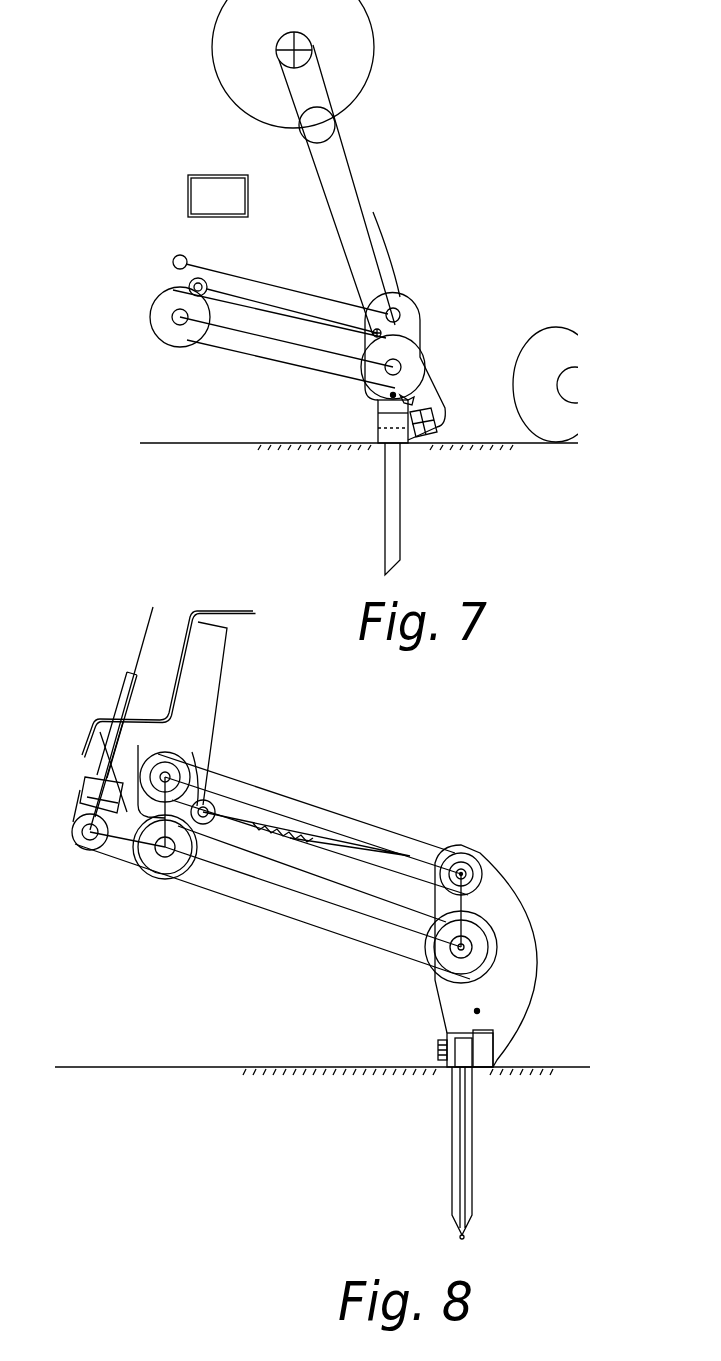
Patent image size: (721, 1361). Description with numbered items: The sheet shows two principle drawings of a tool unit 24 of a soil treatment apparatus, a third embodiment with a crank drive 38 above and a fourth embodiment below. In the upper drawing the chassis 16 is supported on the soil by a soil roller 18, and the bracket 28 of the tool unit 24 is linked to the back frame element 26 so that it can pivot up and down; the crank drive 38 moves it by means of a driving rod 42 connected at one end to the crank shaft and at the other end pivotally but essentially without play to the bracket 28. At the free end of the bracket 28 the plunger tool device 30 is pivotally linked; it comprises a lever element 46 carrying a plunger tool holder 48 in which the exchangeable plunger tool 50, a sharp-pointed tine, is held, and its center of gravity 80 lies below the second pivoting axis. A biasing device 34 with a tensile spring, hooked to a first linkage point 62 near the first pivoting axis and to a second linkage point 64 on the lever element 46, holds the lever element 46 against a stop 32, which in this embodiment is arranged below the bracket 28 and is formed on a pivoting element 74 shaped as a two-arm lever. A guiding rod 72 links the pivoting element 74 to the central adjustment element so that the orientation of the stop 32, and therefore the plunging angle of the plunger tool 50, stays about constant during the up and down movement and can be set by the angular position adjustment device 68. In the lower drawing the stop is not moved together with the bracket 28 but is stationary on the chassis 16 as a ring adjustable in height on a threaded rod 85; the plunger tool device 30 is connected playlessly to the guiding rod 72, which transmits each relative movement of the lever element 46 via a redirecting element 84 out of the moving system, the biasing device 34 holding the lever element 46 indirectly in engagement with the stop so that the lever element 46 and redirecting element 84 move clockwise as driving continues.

In FIG. 8, the chassis 16 is at (153, 606).
In FIG. 7, the soil roller 18 is at (560, 338).
In FIG. 7, the tool unit 24 is at (482, 263).
In FIG. 8, the tool unit 24 is at (530, 843).
In FIG. 8, the back frame element 26 is at (207, 678).
In FIG. 7, the bracket 28 is at (267, 350).
In FIG. 8, the bracket 28 is at (315, 913).
In FIG. 7, the plunger tool device 30 is at (374, 413).
In FIG. 8, the plunger tool device 30 is at (535, 911).
In FIG. 7, the stop 32 is at (421, 447).
In FIG. 8, the stop 32 is at (103, 695).
In FIG. 7, the biasing device 34 is at (273, 307).
In FIG. 8, the biasing device 34 is at (298, 818).
In FIG. 7, the crank drive 38 is at (387, 43).
In FIG. 7, the driving rod 42 is at (343, 192).
In FIG. 8, the lever element 46 is at (522, 950).
In FIG. 7, the plunger tool holder 48 is at (372, 435).
In FIG. 7, the plunger tool 50 is at (405, 535).
In FIG. 8, the plunger tool 50 is at (479, 1148).
In FIG. 7, the first linkage point 62 is at (173, 260).
In FIG. 7, the second linkage point 64 is at (398, 313).
In FIG. 8, the angular position adjustment device 68 is at (95, 696).
In FIG. 7, the guiding rod 72 is at (303, 290).
In FIG. 8, the guiding rod 72 is at (380, 835).
In FIG. 7, the pivoting element 74 is at (428, 388).
In FIG. 7, the center of gravity 80 is at (401, 398).
In FIG. 8, the center of gravity 80 is at (489, 1009).
In FIG. 8, the redirecting element 84 is at (120, 855).
In FIG. 8, the threaded rod 85 is at (138, 684).